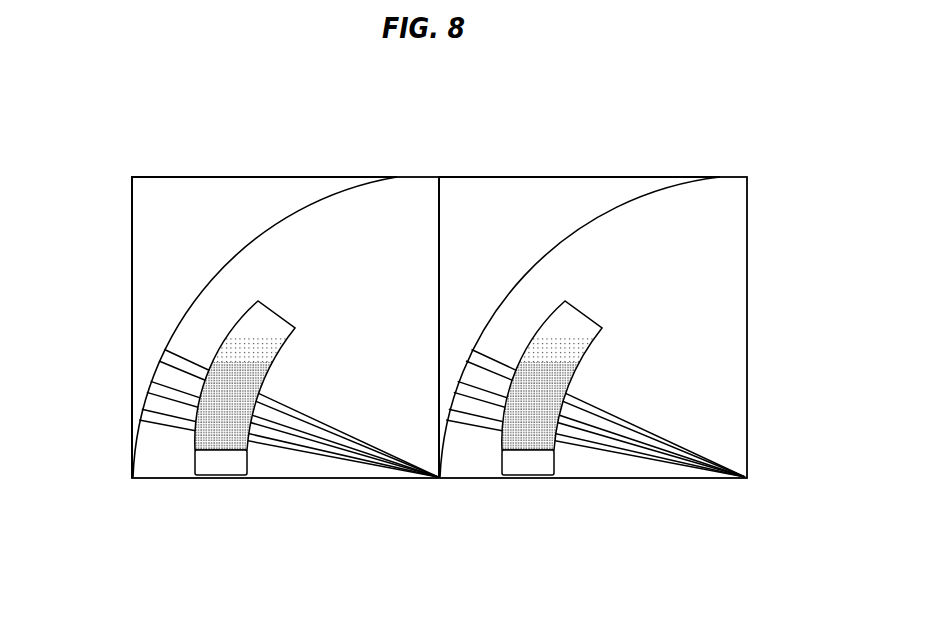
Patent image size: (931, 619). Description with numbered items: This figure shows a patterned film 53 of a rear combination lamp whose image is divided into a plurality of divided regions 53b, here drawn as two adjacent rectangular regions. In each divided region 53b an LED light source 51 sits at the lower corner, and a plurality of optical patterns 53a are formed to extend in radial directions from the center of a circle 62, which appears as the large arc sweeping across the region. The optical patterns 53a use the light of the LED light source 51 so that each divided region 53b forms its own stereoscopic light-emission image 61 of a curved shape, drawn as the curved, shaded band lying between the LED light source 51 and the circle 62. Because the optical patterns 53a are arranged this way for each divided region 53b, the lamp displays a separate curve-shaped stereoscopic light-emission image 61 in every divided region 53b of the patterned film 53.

The LED light source 51 is at (231, 463).
The patterned film 53 is at (739, 161).
The optical patterns 53a is at (175, 392).
The divided regions 53b is at (160, 243).
The stereoscopic light-emission image 61 is at (253, 343).
The circle 62 is at (297, 212).